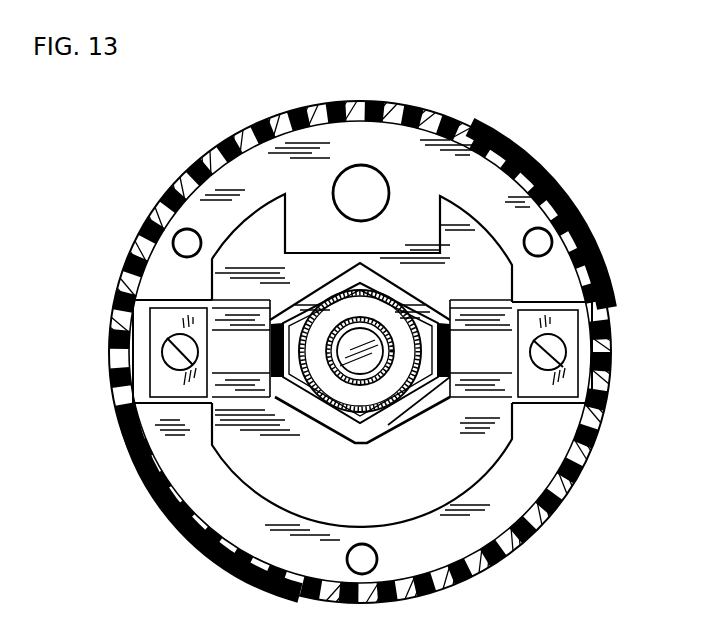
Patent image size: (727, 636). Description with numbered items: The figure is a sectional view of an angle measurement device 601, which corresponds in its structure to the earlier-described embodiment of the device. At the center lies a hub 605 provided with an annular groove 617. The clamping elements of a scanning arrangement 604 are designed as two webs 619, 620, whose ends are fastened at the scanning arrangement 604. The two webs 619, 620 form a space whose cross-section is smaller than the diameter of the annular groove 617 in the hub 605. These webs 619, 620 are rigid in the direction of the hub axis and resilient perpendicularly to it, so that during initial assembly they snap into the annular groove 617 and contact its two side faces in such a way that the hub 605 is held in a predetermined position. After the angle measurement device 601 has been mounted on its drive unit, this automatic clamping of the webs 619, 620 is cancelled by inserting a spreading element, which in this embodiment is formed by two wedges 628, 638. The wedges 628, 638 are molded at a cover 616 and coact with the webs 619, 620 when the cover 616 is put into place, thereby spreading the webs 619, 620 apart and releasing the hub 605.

The angle measurement device 601 is at (492, 126).
The scanning arrangement 604 is at (557, 277).
The hub 605 is at (377, 300).
The cover 616 is at (603, 282).
The annular groove 617 is at (390, 428).
The web 619 is at (308, 300).
The web 620 is at (397, 427).
The wedge 628 is at (273, 325).
The wedge 638 is at (450, 327).